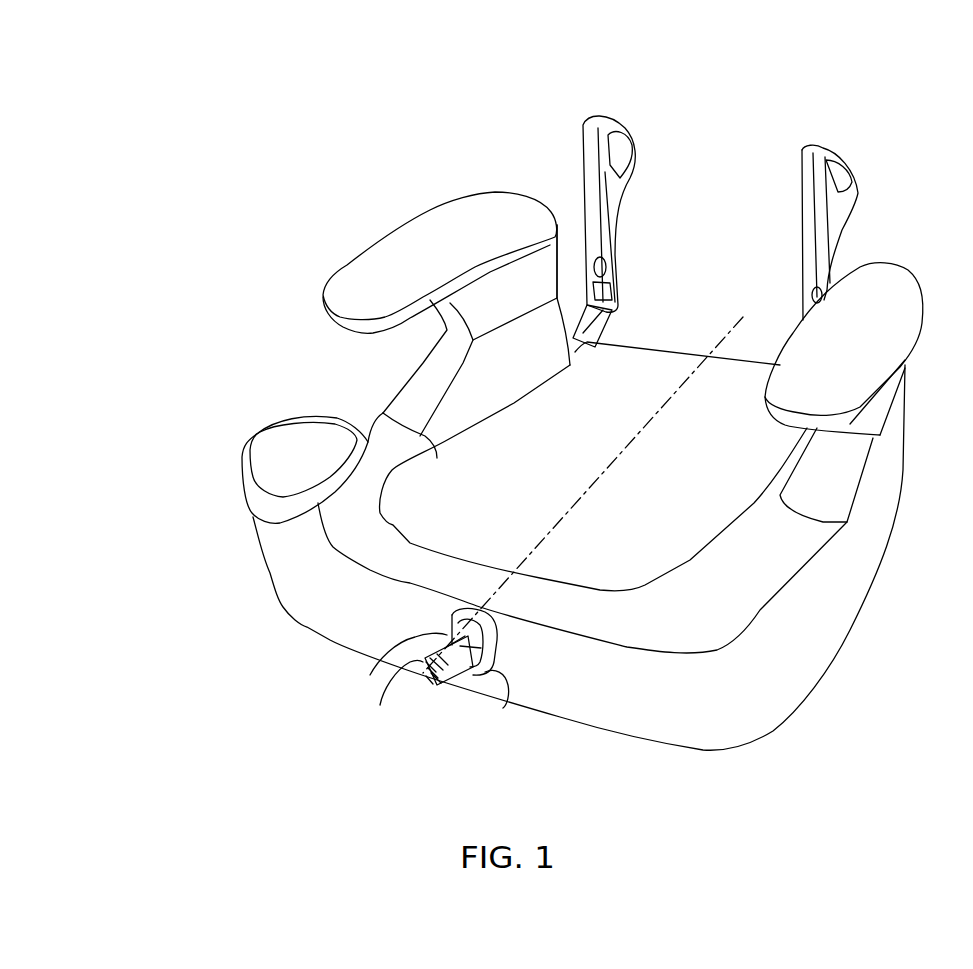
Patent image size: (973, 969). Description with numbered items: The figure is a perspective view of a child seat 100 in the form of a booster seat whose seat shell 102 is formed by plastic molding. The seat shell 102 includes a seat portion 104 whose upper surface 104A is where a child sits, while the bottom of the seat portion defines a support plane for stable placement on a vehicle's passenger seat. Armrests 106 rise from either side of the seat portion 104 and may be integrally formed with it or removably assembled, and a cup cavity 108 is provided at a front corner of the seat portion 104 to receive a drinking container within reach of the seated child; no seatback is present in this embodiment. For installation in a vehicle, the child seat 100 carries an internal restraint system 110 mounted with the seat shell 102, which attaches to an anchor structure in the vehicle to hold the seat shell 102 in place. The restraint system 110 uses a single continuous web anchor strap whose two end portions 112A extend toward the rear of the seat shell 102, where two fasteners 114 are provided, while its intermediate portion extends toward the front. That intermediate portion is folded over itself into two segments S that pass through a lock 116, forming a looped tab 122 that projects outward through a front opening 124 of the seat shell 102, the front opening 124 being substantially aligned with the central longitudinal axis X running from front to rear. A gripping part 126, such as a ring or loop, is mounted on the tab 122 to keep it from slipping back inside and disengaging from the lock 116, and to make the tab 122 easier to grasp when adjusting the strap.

The child seat 100 is at (50, 61).
The seat shell 102 is at (852, 582).
The seat portion 104 is at (651, 505).
The upper surface 104A is at (385, 409).
The armrests 106 is at (457, 210).
The cup cavity 108 is at (268, 450).
The restraint system 110 is at (568, 92).
The end portions 112A is at (592, 330).
The fasteners 114 is at (600, 115).
The lock 116 is at (442, 699).
The looped tab 122 is at (425, 692).
The front opening 124 is at (490, 668).
The gripping part 126 is at (452, 697).
The segments S is at (412, 693).
The central longitudinal axis X is at (730, 323).